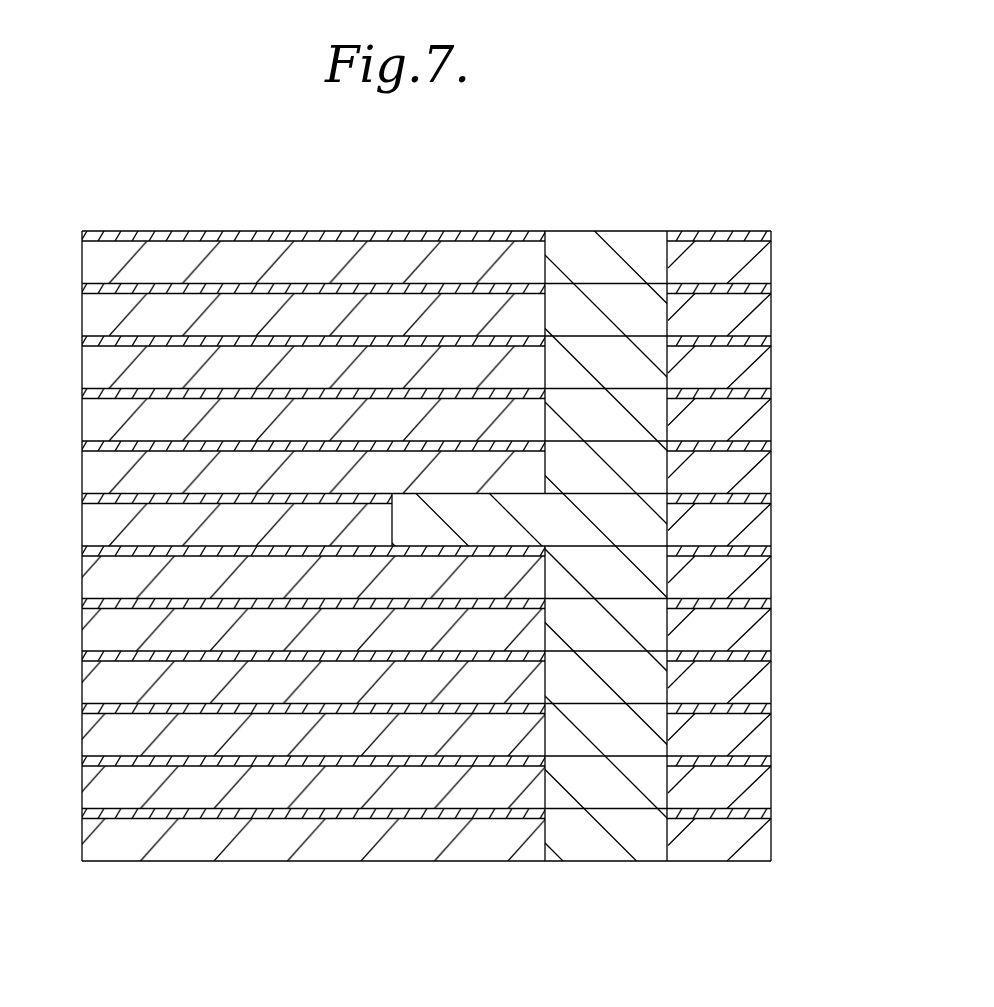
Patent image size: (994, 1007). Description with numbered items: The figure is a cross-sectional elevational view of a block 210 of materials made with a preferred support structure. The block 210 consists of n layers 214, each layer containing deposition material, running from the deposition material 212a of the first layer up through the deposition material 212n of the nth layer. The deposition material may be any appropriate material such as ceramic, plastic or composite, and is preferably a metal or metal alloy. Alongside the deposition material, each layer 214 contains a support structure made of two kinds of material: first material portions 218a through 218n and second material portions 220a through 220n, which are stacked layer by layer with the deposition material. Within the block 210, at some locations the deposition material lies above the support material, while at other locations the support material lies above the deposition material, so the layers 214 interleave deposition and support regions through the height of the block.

The block of materials 210 is at (200, 222).
The deposition material 212n is at (603, 262).
The deposition material 212a is at (585, 847).
The layers 214 is at (193, 787).
The first material portion 218n is at (757, 267).
The first material portion 218a is at (760, 845).
The second material portion 220n is at (770, 238).
The second material portion 220a is at (771, 810).